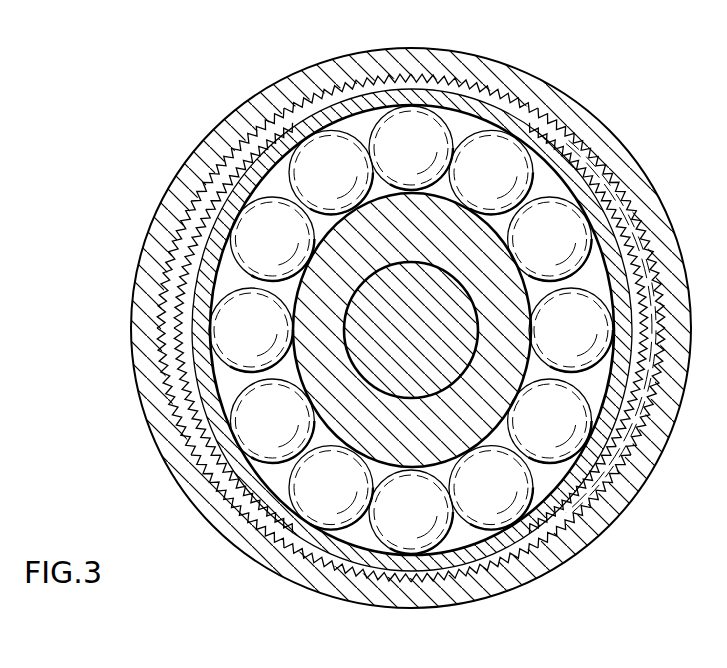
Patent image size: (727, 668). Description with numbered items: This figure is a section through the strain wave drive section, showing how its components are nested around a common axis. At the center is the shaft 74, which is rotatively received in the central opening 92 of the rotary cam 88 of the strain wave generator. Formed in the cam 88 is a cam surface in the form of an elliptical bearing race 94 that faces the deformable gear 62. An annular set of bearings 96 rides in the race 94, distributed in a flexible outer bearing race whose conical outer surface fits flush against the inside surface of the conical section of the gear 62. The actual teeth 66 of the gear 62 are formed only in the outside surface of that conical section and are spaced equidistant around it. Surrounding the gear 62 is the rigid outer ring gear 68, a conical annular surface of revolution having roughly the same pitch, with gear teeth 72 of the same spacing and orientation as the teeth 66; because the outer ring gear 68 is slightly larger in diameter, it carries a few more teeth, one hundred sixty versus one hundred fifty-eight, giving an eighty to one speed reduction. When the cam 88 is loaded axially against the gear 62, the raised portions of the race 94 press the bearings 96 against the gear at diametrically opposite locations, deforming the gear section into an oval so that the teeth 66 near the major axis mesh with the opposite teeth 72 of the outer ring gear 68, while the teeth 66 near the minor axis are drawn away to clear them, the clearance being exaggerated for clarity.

The gear 62 is at (202, 223).
The teeth 66 is at (210, 312).
The rigid outer ring gear 68 is at (240, 128).
The gear teeth 72 is at (497, 97).
The shaft 74 is at (449, 341).
The rotary cam 88 is at (406, 255).
The central opening 92 is at (474, 325).
The elliptical bearing race 94 is at (549, 186).
The bearings 96 is at (421, 149).